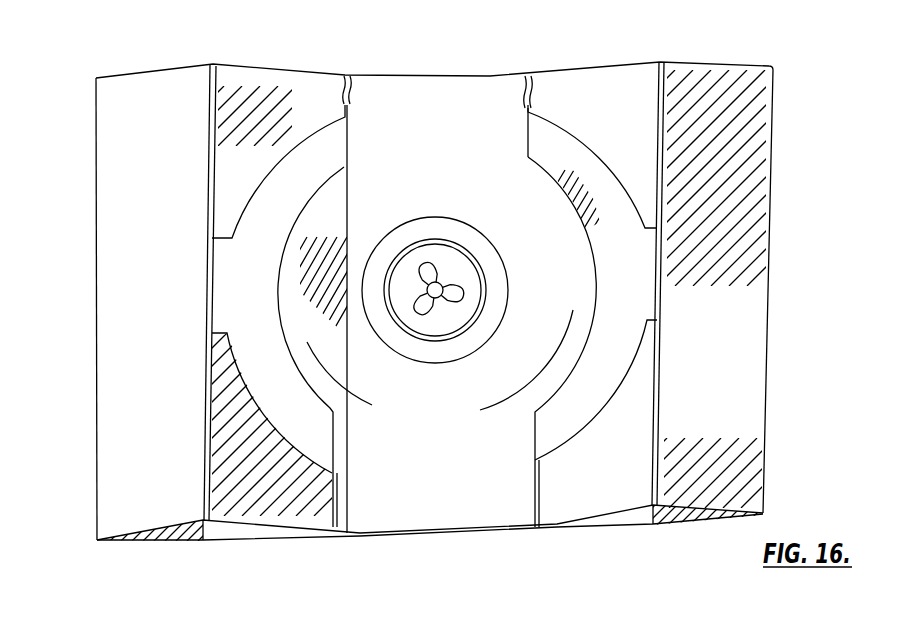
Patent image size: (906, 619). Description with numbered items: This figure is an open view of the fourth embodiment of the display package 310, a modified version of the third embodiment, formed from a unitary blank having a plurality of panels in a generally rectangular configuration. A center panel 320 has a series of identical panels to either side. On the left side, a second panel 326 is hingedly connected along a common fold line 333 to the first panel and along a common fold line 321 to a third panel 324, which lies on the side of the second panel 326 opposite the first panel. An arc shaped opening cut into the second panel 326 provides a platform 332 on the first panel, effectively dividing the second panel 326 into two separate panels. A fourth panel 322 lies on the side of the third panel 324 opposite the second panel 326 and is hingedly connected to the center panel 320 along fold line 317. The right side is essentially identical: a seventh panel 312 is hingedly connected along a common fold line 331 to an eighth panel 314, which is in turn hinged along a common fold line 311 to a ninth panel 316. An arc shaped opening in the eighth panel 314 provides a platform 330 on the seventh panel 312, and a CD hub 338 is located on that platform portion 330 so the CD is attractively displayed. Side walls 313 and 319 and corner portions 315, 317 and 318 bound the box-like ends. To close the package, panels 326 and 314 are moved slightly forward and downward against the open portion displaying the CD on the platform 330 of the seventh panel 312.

The disc storage container 310 is at (612, 50).
The fold line 311 is at (203, 455).
The seventh panel 312 is at (440, 147).
The left side wall 313 is at (96, 440).
The eighth panel 314 is at (618, 122).
The left corner fold 315 is at (207, 540).
The ninth panel 316 is at (730, 354).
The fold line 317 is at (655, 527).
The right end flap 318 is at (681, 523).
The right side wall 319 is at (767, 337).
The center panel 320 is at (247, 534).
The fold line 321 is at (662, 430).
The fourth panel 322 is at (162, 533).
The third panel 324 is at (160, 201).
The second panel 326 is at (288, 124).
The platform 330 is at (514, 379).
The fold line 331 is at (349, 97).
The platform 332 is at (347, 392).
The fold line 333 is at (525, 96).
The CD hub 338 is at (412, 205).